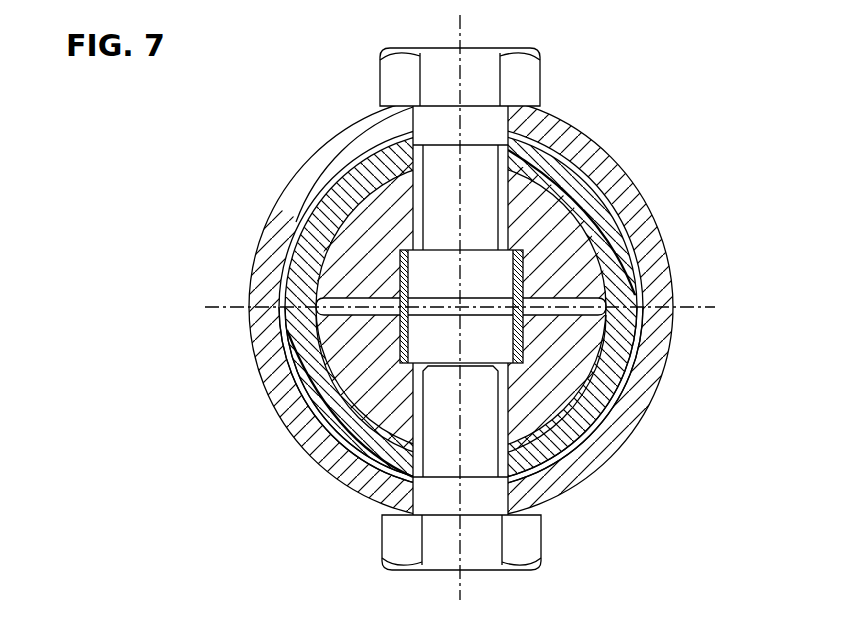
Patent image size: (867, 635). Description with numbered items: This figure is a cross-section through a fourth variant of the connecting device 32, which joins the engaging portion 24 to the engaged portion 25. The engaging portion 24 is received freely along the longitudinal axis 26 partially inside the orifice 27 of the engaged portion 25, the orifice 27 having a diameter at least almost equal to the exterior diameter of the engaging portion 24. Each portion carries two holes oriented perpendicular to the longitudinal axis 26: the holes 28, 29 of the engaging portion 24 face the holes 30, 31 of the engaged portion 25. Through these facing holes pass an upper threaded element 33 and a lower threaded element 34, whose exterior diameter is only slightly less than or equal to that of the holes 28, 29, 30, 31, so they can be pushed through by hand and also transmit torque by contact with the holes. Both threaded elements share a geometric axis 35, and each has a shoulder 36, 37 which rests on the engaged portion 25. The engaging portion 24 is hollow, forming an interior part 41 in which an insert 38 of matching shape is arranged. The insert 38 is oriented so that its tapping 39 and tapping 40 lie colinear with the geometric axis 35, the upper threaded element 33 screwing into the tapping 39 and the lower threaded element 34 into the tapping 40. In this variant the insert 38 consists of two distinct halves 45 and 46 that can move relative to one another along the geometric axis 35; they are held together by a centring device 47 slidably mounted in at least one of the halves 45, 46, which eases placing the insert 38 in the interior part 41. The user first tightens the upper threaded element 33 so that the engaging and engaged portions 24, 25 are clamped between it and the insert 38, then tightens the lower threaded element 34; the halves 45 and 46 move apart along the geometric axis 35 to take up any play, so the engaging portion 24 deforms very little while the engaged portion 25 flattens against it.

The engaging portion 24 is at (313, 230).
The engaged portion 25 is at (340, 168).
The longitudinal axis 26 is at (460, 306).
The orifice 27 is at (413, 480).
The hole 28 is at (413, 154).
The hole 29 is at (512, 478).
The hole 30 is at (413, 127).
The hole 31 is at (512, 492).
The connecting device 32 is at (548, 64).
The upper threaded element 33 is at (529, 89).
The lower threaded element 34 is at (528, 533).
The geometric axis 35 is at (463, 592).
The shoulder 36 is at (519, 111).
The shoulder 37 is at (537, 509).
The insert 38 is at (560, 283).
The tapping 39 is at (521, 223).
The tapping 40 is at (510, 405).
The interior part 41 is at (320, 313).
The first half of insert 45 is at (533, 197).
The second half of insert 46 is at (540, 385).
The centring device 47 is at (517, 278).